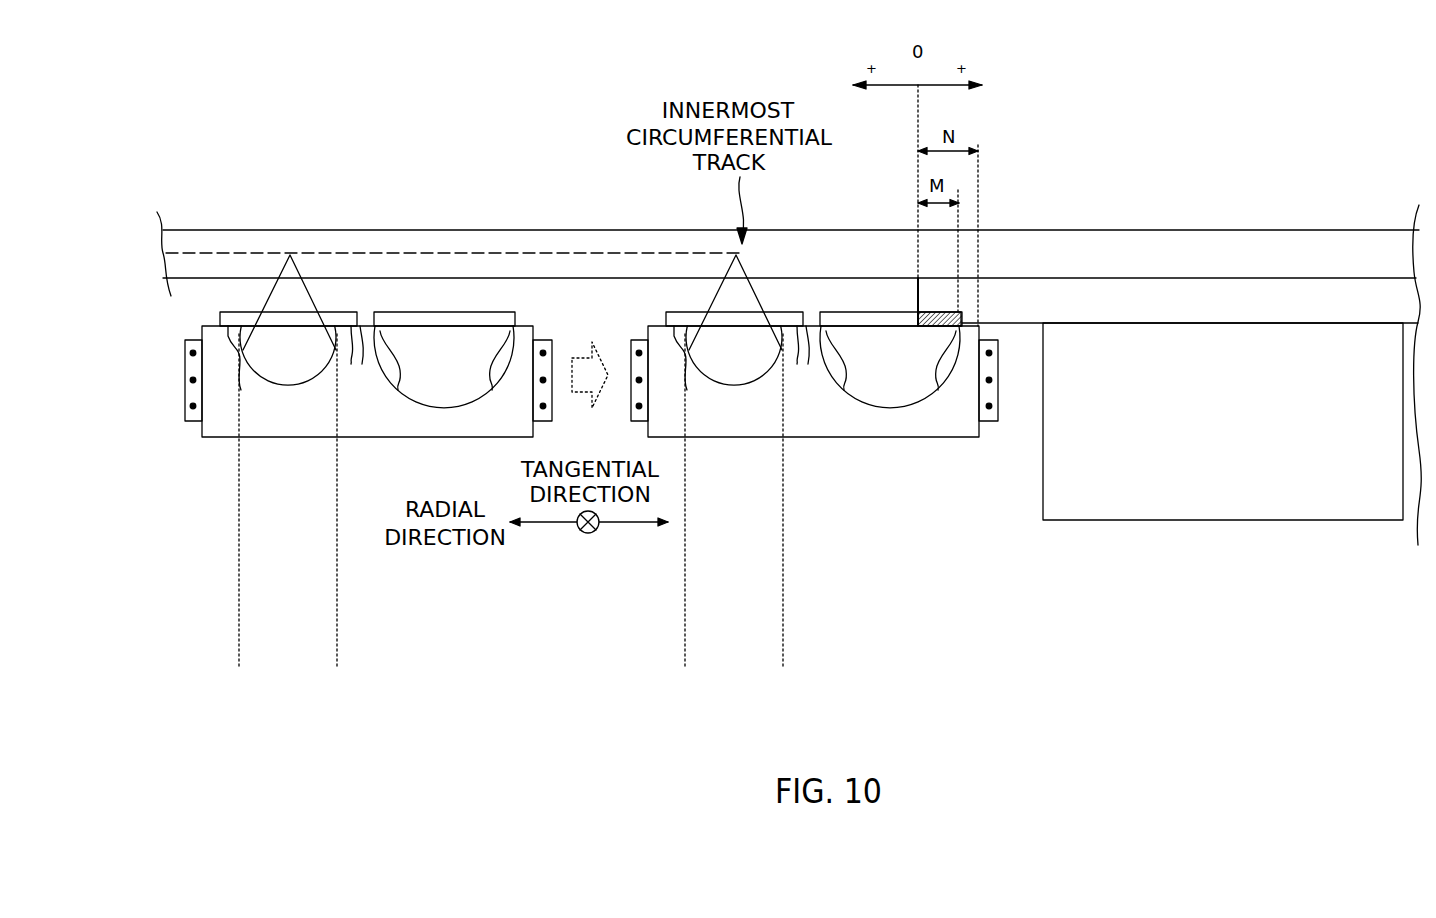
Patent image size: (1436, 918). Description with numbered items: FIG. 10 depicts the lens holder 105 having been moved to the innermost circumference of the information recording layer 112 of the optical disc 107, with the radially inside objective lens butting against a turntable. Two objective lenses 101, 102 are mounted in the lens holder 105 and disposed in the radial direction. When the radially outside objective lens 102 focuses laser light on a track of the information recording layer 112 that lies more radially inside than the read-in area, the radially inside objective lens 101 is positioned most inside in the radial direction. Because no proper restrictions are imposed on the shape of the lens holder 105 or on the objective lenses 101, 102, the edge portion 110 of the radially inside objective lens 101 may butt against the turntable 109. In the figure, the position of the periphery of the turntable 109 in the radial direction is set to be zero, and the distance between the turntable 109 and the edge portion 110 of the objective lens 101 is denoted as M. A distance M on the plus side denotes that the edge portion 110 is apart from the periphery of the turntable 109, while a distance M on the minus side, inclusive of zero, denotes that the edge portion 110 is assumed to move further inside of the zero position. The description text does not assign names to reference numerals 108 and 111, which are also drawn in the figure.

The radially inside objective lens 101 is at (441, 386).
The radially outside objective lens 102 is at (287, 386).
The lens holder 105 is at (392, 438).
The optical disc 107 is at (1219, 228).
The turntable 108 is at (1188, 522).
The turntable 109 is at (1020, 326).
The edge portion 110 is at (672, 375).
The suspension wire 111 is at (511, 359).
The information recording layer 112 is at (160, 255).